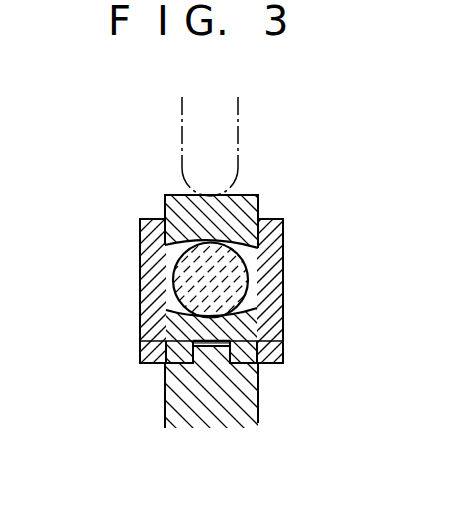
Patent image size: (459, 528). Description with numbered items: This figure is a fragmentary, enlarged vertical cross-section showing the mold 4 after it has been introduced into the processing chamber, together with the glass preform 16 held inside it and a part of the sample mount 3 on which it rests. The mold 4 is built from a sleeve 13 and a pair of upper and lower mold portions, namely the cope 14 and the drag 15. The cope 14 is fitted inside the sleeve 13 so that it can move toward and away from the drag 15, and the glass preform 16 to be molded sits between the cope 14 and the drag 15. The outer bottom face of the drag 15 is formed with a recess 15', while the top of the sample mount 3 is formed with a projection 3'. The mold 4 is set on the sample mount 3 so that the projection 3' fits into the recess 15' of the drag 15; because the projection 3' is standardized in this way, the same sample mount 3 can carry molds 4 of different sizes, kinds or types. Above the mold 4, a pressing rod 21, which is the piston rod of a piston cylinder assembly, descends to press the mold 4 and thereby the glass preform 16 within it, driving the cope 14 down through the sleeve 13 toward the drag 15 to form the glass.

The sample mount 3 is at (229, 325).
The projection 3' is at (175, 382).
The mold 4 is at (129, 230).
The sleeve 13 is at (150, 273).
The cope 14 is at (258, 202).
The drag 15 is at (229, 325).
The recess 15' is at (159, 340).
The glass preform 16 is at (240, 276).
The pressing rod 21 is at (238, 122).